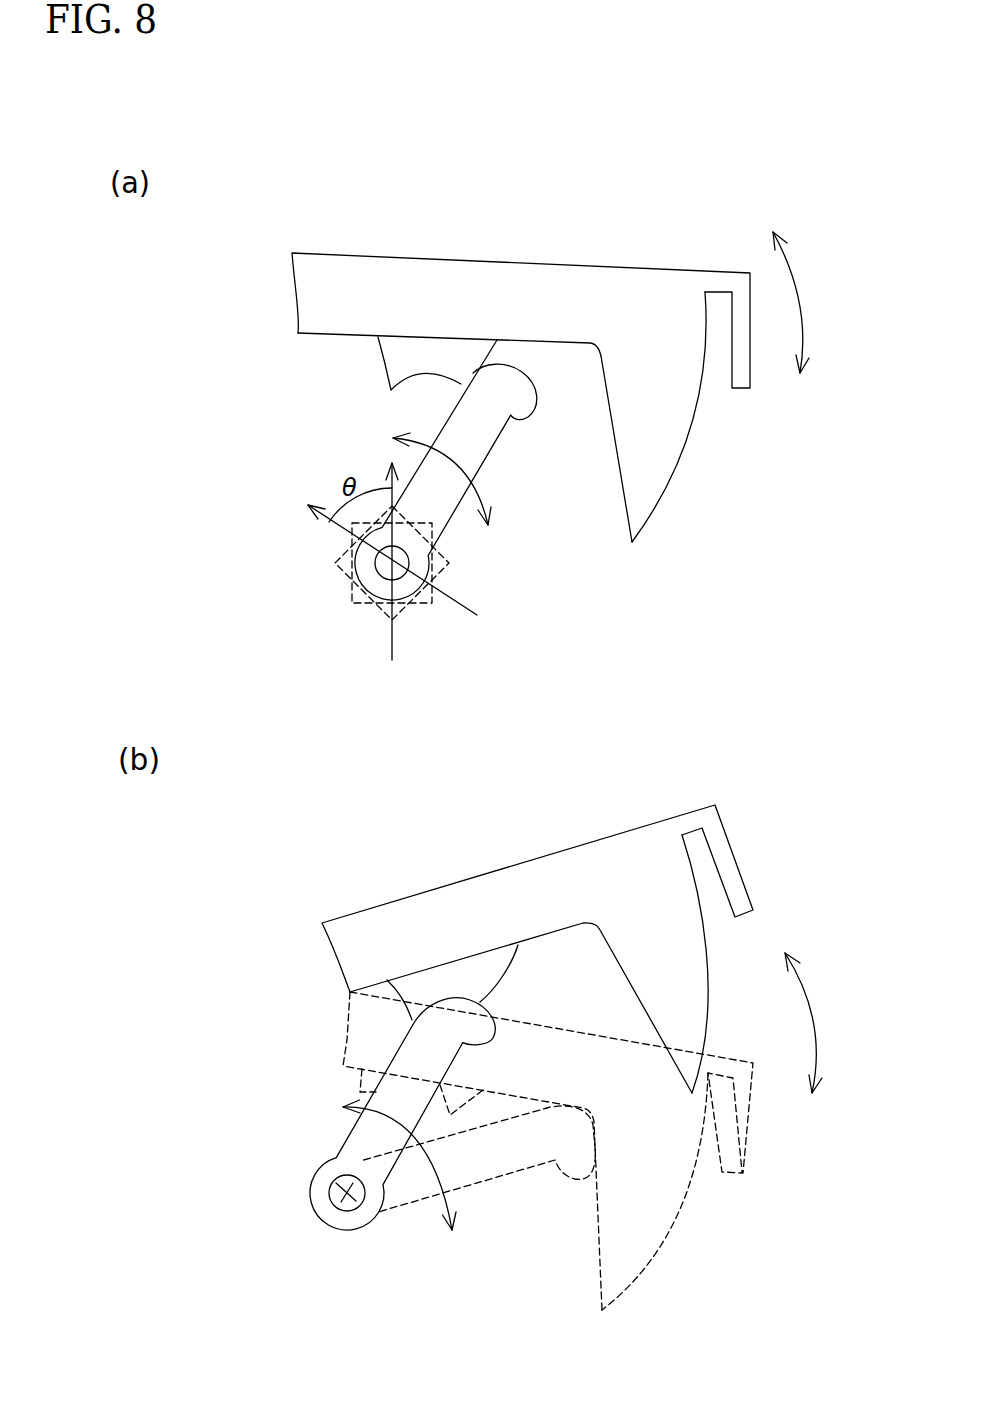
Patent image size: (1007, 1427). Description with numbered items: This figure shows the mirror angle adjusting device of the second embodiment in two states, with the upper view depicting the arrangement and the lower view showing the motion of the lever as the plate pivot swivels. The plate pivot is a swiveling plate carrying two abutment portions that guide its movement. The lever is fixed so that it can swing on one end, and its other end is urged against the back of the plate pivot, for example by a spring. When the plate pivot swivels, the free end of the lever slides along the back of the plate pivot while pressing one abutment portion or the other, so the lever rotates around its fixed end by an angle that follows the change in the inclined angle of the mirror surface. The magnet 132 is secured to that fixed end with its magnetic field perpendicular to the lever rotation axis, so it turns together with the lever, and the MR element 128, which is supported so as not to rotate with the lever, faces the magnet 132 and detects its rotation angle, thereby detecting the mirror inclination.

The MR element 128 is at (427, 603).
The magnet 132 is at (442, 572).